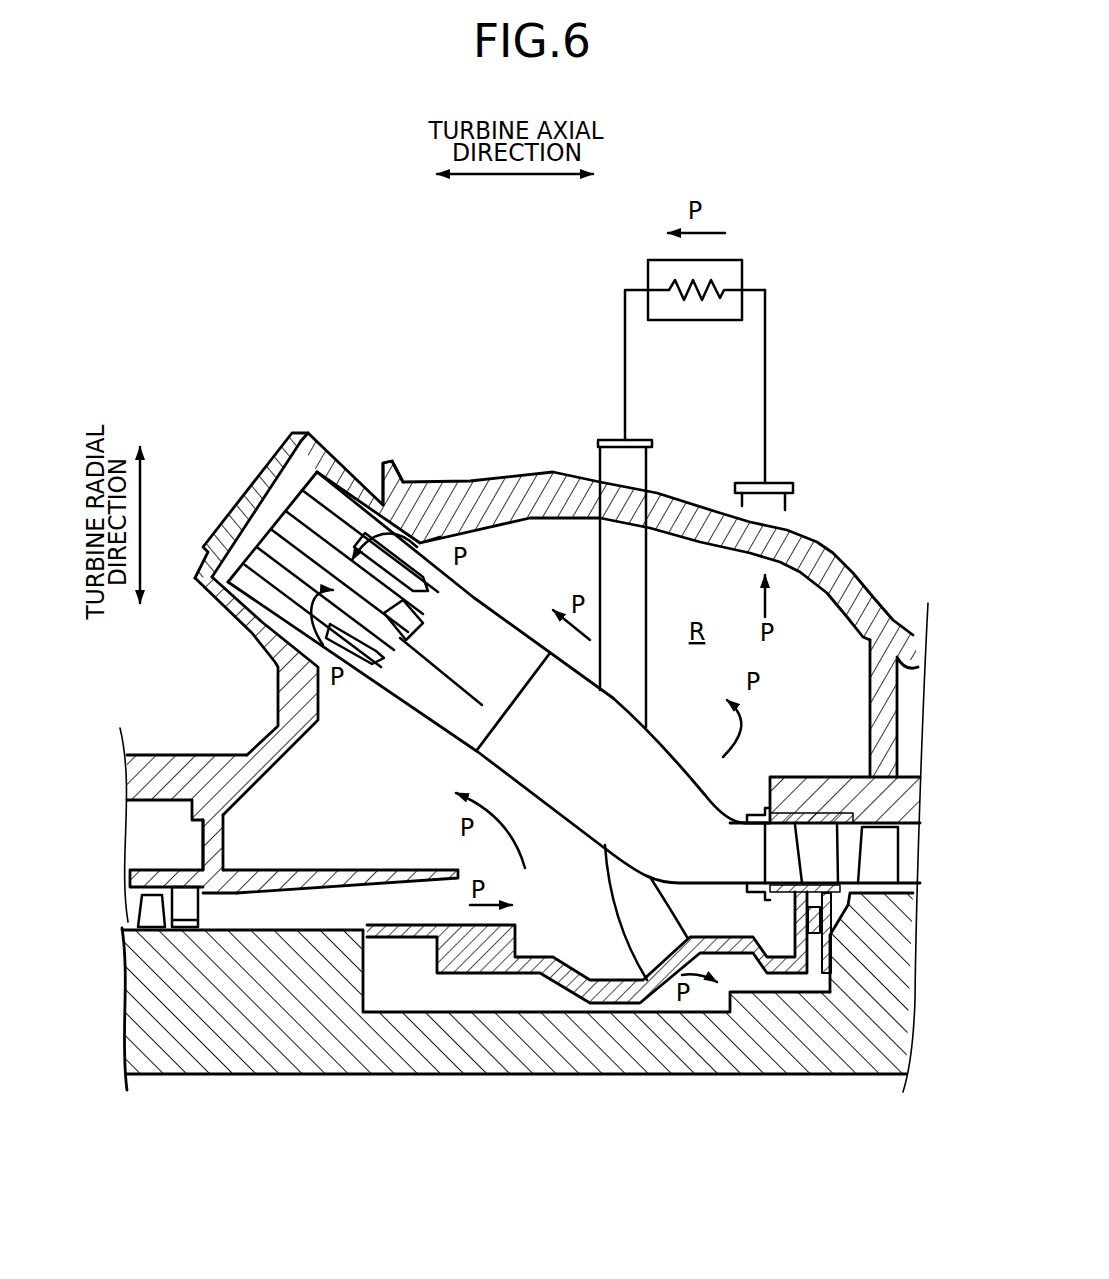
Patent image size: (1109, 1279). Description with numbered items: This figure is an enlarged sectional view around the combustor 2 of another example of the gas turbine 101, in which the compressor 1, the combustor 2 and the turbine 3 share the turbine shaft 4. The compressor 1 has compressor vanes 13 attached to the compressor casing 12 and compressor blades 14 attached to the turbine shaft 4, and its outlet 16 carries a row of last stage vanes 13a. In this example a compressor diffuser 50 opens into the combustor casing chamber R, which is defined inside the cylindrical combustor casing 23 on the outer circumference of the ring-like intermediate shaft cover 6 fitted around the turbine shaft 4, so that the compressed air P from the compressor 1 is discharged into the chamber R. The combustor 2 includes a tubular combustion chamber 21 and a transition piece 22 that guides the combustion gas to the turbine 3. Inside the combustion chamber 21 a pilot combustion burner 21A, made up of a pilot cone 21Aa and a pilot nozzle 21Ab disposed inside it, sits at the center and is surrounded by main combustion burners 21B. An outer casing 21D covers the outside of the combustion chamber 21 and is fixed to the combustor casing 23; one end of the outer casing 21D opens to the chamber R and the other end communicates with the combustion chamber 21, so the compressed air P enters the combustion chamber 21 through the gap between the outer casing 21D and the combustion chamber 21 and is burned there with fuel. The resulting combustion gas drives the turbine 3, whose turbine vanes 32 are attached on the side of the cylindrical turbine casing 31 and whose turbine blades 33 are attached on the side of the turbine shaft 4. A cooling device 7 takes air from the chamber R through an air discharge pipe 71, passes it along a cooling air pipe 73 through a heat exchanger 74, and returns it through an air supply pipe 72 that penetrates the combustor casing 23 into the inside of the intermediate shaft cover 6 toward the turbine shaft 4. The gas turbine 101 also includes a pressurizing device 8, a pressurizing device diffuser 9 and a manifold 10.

The compressor 1 is at (132, 726).
The combustor 2 is at (841, 550).
The turbine 3 is at (940, 818).
The turbine shaft 4 is at (300, 1060).
The intermediate shaft cover 6 is at (720, 937).
The cooling device 7 is at (620, 330).
The pressurizing device 8 is at (788, 988).
The pressurizing device diffuser 9 is at (808, 927).
The manifold 10 is at (820, 900).
The compressor casing 12 is at (143, 778).
The compressor vanes 13 is at (292, 735).
The last stage vanes 13a is at (187, 890).
The compressor blades 14 is at (148, 907).
The outlet 16 is at (227, 897).
The combustion chamber 21 is at (463, 590).
The pilot combustion burner 21A is at (465, 622).
The pilot cone 21Aa is at (413, 688).
The pilot nozzle 21Ab is at (372, 684).
The main combustion burners 21B is at (334, 523).
The outer casing 21D is at (378, 520).
The transition piece 22 is at (660, 755).
The combustor casing 23 is at (862, 587).
The turbine casing 31 is at (783, 777).
The turbine vane 32 is at (823, 835).
The turbine blade 33 is at (887, 853).
The compressor diffuser 50 is at (347, 870).
The air discharge pipe 71 is at (771, 508).
The air supply pipe 72 is at (613, 470).
The cooling air pipe 73 is at (768, 348).
The heat exchanger 74 is at (745, 272).
The gas turbine 101 is at (918, 437).